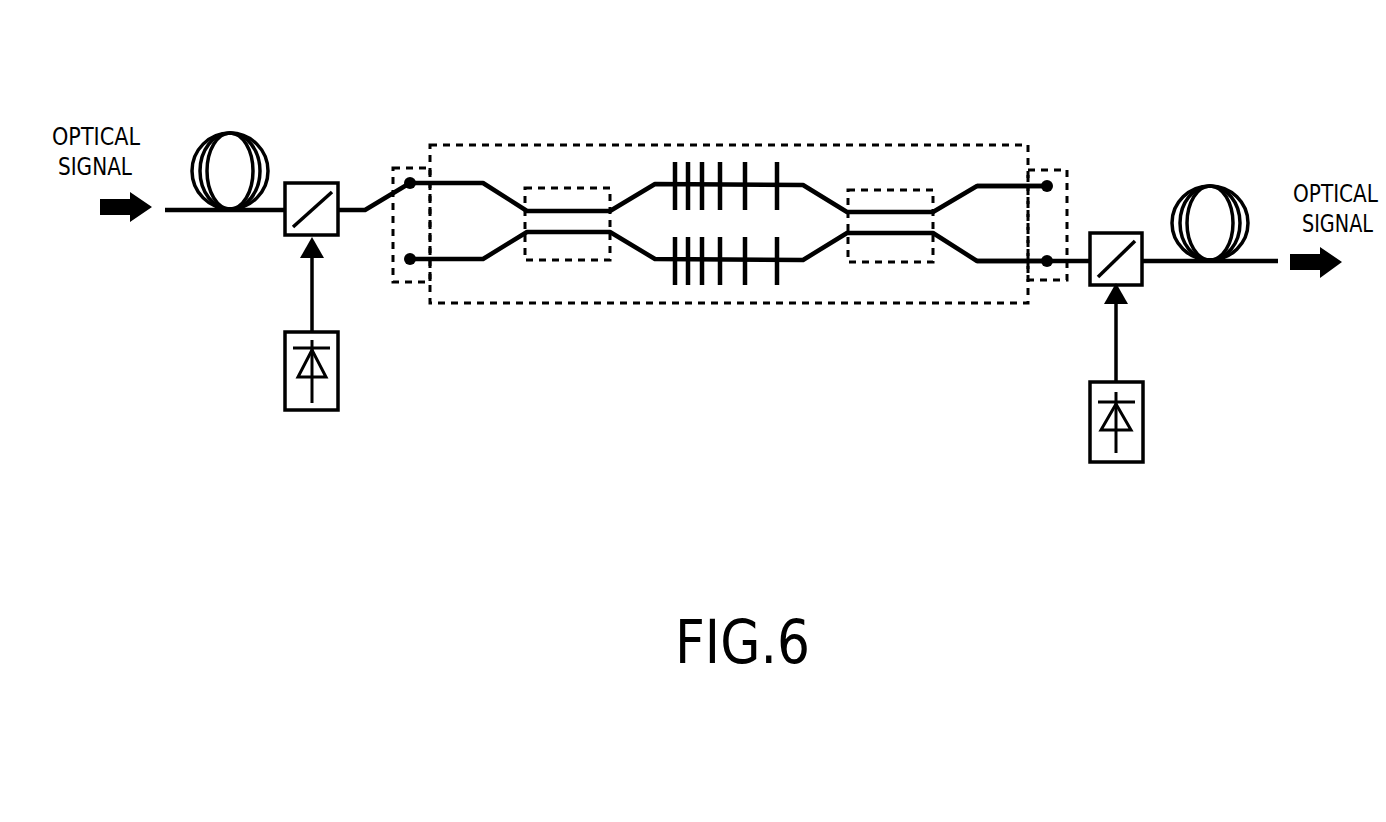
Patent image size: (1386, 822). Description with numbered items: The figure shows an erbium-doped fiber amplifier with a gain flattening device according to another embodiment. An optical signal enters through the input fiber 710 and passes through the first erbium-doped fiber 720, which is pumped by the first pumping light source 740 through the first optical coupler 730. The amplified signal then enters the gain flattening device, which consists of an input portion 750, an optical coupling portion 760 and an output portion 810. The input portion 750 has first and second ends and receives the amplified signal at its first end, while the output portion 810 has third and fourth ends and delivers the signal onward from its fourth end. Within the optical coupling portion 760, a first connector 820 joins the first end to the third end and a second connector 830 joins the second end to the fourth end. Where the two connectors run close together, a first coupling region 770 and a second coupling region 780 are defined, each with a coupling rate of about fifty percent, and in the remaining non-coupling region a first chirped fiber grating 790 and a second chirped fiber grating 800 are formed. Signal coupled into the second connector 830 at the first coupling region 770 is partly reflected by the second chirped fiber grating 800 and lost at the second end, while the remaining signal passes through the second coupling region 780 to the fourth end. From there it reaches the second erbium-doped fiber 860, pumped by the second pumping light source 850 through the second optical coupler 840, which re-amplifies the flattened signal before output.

The input optical fiber 710 is at (182, 212).
The first erbium-doped fiber 720 is at (229, 132).
The first optical coupler 730 is at (320, 183).
The first pumping light source 740 is at (338, 382).
The input portion 750 is at (410, 166).
The optical coupling portion 760 is at (563, 304).
The first coupling region 770 is at (582, 188).
The second coupling region 780 is at (888, 190).
The first chirped fiber grating 790 is at (752, 162).
The second chirped fiber grating 800 is at (748, 285).
The output portion 810 is at (1067, 170).
The first connector 820 is at (1013, 183).
The second connector 830 is at (1010, 267).
The second optical coupler 840 is at (1115, 233).
The second pumping light source 850 is at (1090, 418).
The second erbium-doped fiber 860 is at (1215, 188).